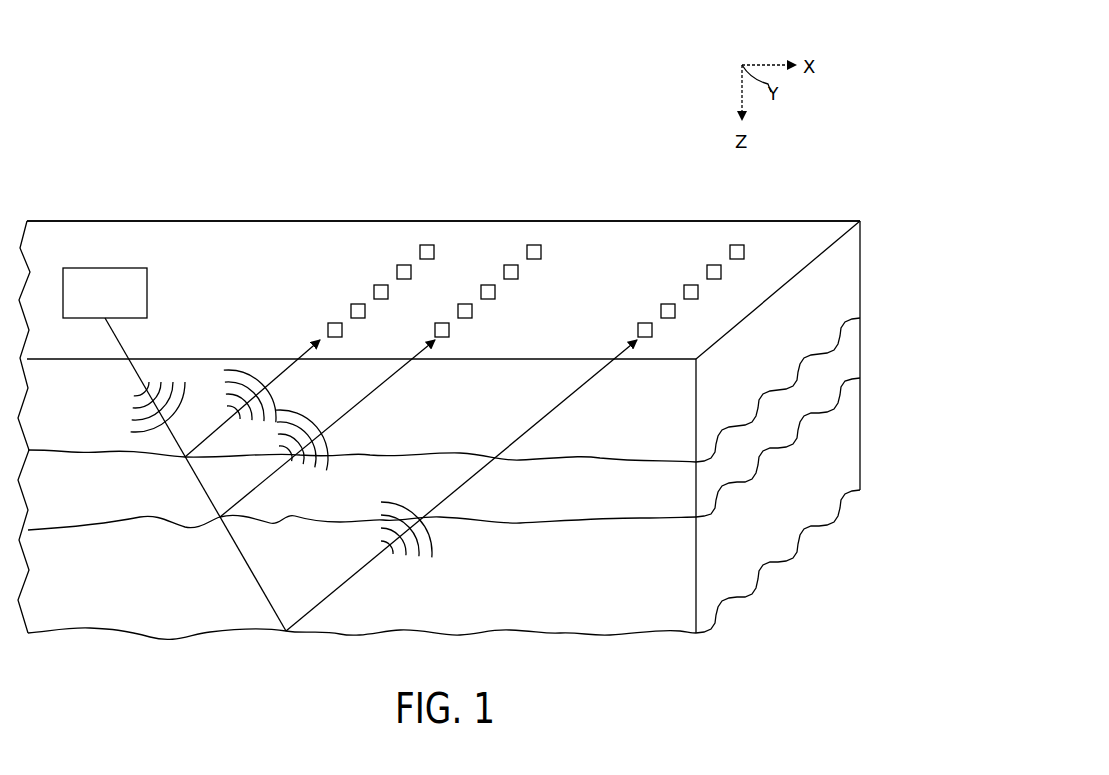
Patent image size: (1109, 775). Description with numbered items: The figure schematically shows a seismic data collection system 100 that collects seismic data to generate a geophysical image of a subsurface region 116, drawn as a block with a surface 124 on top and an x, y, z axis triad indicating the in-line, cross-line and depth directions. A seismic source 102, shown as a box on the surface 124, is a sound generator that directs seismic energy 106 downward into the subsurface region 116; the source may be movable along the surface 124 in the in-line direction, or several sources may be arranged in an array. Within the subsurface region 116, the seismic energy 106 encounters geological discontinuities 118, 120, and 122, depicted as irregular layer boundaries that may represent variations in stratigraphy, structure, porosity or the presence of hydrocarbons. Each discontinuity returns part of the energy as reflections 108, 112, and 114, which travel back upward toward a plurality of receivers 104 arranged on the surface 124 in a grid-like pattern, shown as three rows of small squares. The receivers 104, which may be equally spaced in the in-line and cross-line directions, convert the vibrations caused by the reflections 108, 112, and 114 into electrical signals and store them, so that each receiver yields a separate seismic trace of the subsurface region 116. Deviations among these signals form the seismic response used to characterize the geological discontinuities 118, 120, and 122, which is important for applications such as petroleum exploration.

The seismic data collection system 100 is at (127, 105).
The seismic source 102 is at (100, 280).
The receivers 104 is at (428, 248).
The seismic energy 106 is at (150, 389).
The reflection 108 is at (283, 373).
The reflection 112 is at (393, 373).
The reflection 114 is at (598, 373).
The subsurface region 116 is at (853, 248).
The geological discontinuity 118 is at (860, 320).
The geological discontinuity 120 is at (860, 378).
The geological discontinuity 122 is at (860, 490).
The surface 124 is at (338, 228).